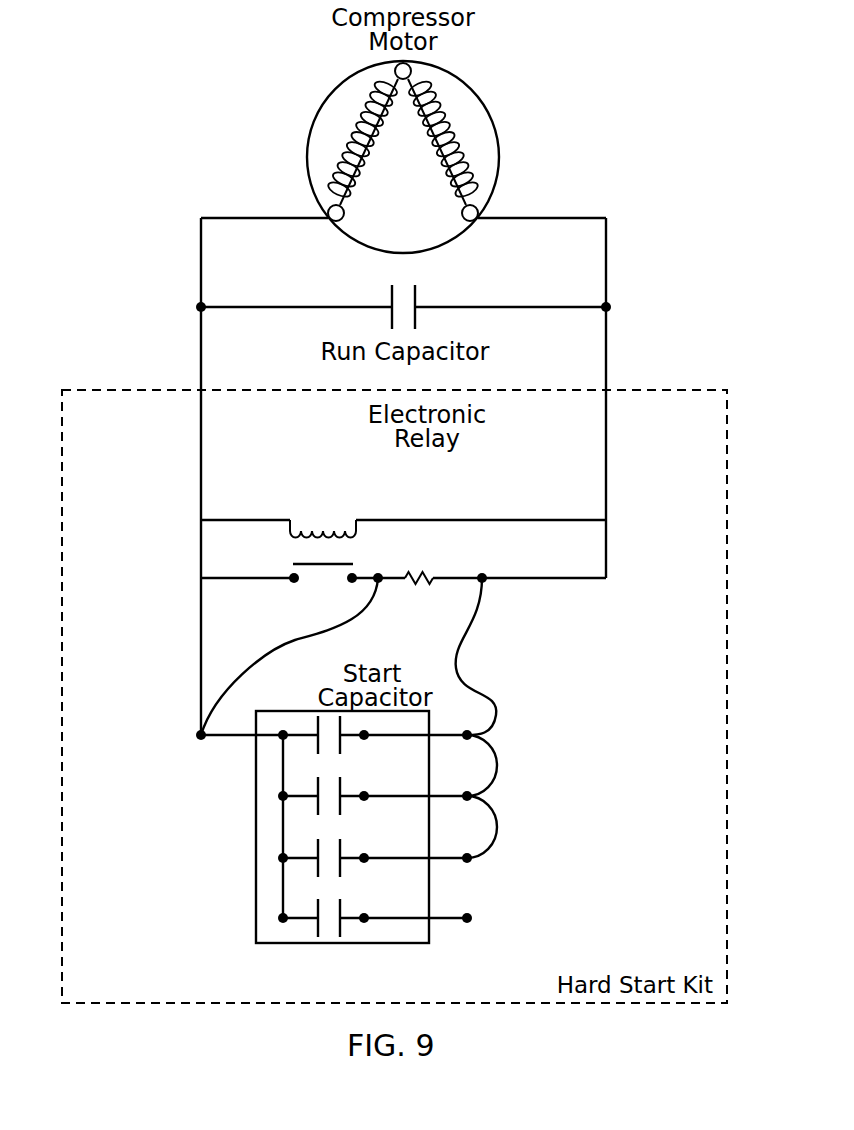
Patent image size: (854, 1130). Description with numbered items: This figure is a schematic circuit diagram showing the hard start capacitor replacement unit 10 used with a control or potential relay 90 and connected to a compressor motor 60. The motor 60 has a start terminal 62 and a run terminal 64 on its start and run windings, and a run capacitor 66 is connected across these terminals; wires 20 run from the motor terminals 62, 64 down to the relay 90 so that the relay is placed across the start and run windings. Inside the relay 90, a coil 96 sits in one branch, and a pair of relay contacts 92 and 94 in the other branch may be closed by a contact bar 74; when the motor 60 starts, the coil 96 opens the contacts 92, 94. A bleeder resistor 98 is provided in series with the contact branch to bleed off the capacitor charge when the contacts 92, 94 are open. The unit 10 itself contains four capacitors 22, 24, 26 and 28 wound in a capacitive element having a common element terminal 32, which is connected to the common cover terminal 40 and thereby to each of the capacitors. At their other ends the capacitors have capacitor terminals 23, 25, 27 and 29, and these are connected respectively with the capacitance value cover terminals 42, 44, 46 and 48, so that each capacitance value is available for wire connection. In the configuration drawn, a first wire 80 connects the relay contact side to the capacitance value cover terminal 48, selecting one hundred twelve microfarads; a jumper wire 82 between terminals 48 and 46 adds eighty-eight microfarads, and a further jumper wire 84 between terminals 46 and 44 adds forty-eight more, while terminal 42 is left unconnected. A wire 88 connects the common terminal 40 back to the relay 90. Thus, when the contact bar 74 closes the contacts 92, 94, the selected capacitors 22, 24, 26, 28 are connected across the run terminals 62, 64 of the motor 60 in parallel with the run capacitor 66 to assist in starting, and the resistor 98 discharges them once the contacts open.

The hard start capacitor replacement unit 10 is at (97, 390).
The wires 20 is at (201, 350).
The capacitor 22 is at (318, 908).
The capacitor terminal 23 is at (365, 915).
The capacitor 24 is at (318, 848).
The capacitor terminal 25 is at (365, 855).
The capacitor 26 is at (318, 787).
The capacitor terminal 27 is at (366, 794).
The capacitor 28 is at (318, 725).
The capacitor terminal 29 is at (368, 741).
The common element terminal 32 is at (283, 848).
The common cover terminal 40 is at (196, 738).
The capacitance value cover terminal 42 is at (467, 917).
The capacitance value cover terminal 44 is at (467, 857).
The capacitance value cover terminal 46 is at (467, 795).
The capacitance value cover terminal 48 is at (465, 733).
The compressor motor 60 is at (494, 112).
The start terminal 62 is at (478, 208).
The run terminal 64 is at (328, 206).
The run capacitor 66 is at (415, 293).
The contact bar 74 is at (305, 562).
The first wire 80 is at (473, 675).
The jumper wire 82 is at (497, 767).
The jumper wire 84 is at (497, 829).
The wire 88 is at (260, 652).
The control or potential relay 90 is at (403, 534).
The relay contact 92 is at (294, 584).
The relay contact 94 is at (355, 575).
The coil 96 is at (325, 520).
The bleeder resistor 98 is at (427, 577).